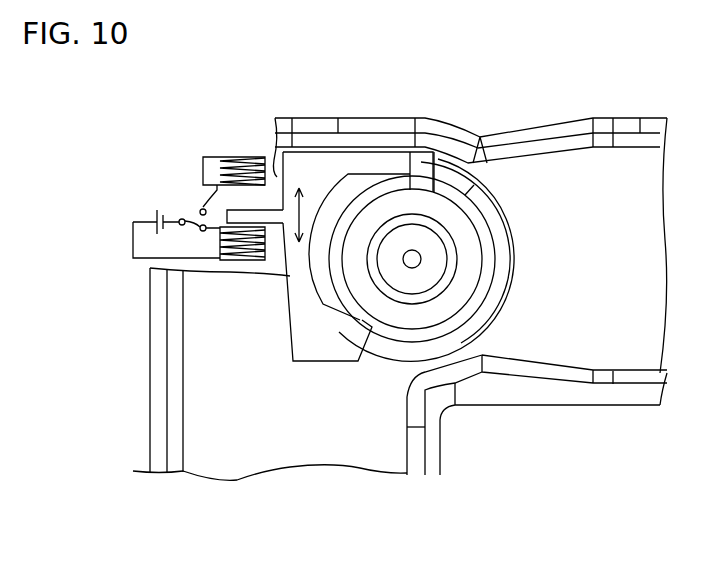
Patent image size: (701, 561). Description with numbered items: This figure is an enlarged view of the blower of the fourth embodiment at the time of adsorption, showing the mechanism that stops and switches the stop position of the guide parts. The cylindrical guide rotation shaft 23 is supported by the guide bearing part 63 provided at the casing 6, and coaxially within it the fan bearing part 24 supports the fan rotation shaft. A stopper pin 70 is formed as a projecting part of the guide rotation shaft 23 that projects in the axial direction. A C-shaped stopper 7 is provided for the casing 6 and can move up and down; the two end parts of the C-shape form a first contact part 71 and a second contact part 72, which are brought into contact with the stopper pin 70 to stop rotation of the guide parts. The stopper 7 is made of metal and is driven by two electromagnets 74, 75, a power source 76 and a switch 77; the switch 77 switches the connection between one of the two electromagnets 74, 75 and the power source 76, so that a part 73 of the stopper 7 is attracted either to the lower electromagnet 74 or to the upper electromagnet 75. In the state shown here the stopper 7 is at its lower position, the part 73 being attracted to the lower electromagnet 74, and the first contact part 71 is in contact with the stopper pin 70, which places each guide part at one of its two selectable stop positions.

The casing 6 is at (257, 397).
The stopper 7 is at (318, 176).
The guide rotation shaft 23 is at (387, 180).
The fan bearing part 24 is at (425, 280).
The guide bearing part 63 is at (492, 307).
The stopper pin 70 is at (453, 190).
The first contact part 71 is at (422, 183).
The second contact part 72 is at (360, 335).
The part of the stopper 73 is at (232, 210).
The electromagnet 74 is at (253, 253).
The electromagnet 75 is at (242, 157).
The power source 76 is at (158, 232).
The switch 77 is at (183, 219).